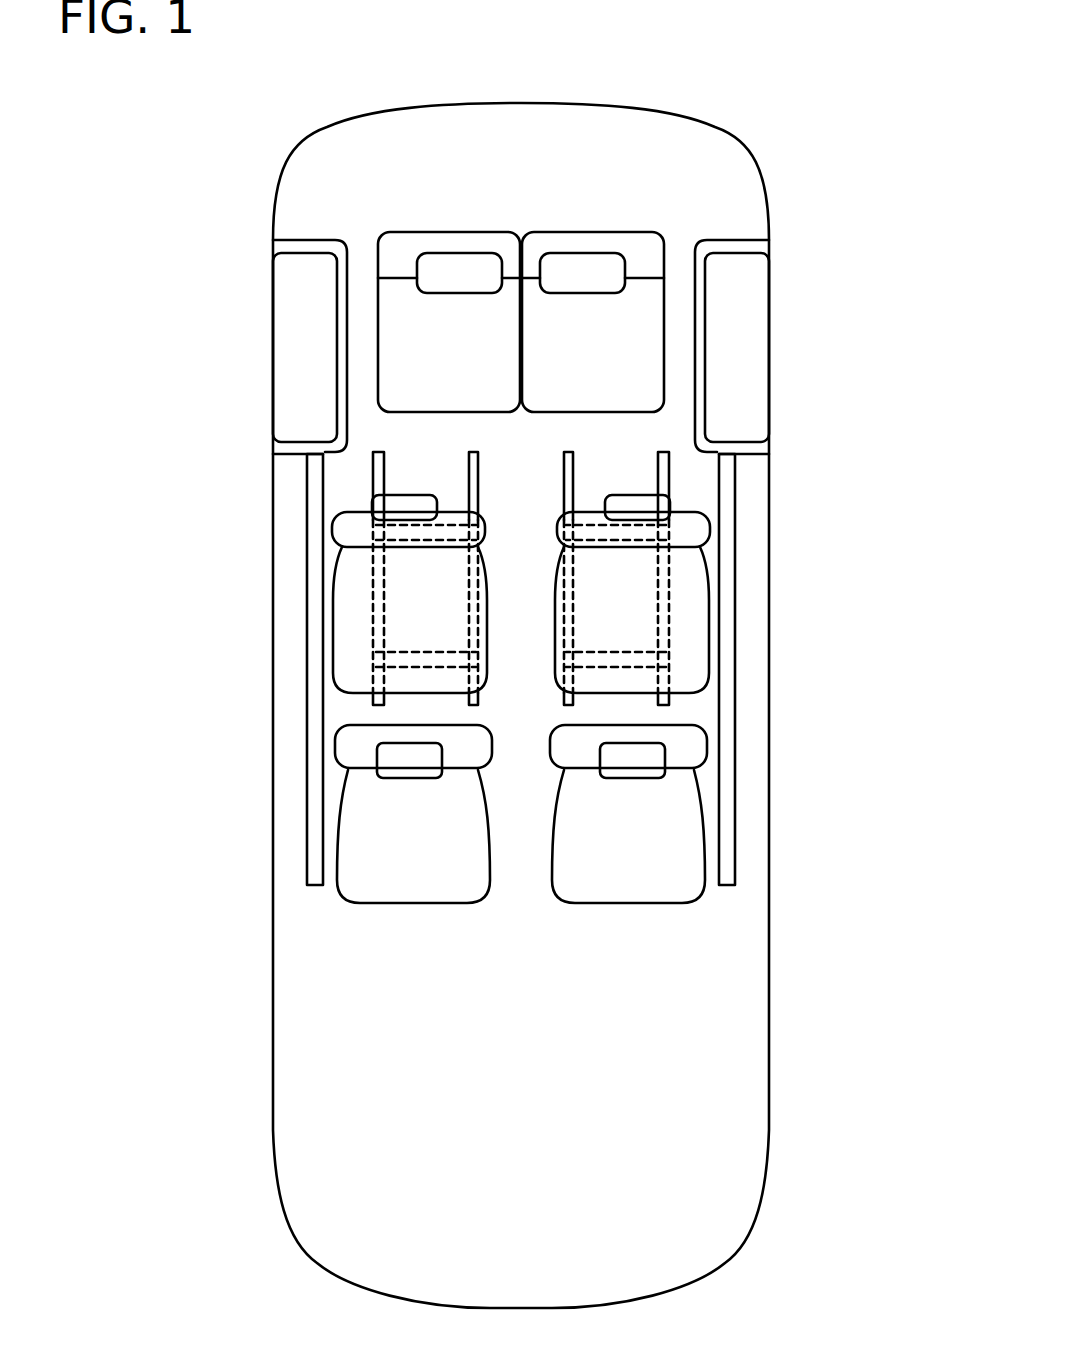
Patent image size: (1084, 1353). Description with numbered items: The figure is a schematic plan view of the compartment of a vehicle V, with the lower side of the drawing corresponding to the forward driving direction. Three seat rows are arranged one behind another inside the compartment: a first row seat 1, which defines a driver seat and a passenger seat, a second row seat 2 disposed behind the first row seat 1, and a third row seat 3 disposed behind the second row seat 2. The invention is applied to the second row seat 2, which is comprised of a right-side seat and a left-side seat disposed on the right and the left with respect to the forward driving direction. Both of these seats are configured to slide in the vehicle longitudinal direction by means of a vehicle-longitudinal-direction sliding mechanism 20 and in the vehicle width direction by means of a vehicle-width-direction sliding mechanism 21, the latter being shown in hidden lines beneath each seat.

The vehicle V is at (848, 205).
The first row seat 1 is at (388, 830).
The second row seat 2 is at (345, 608).
The third row seat 3 is at (457, 337).
The vehicle-longitudinal-direction sliding mechanism 20 is at (468, 467).
The vehicle-width-direction sliding mechanism 21 is at (392, 557).